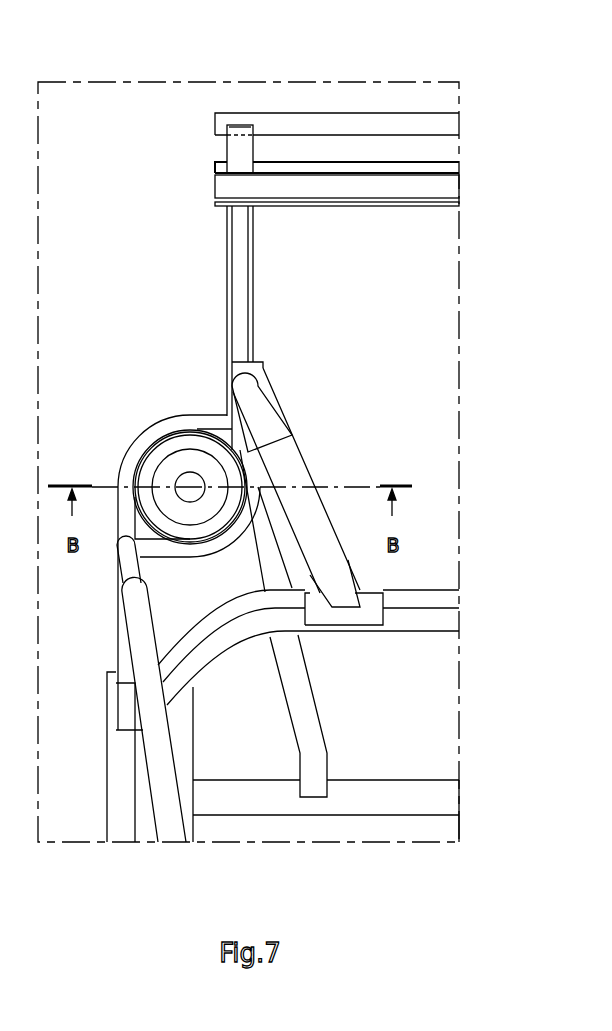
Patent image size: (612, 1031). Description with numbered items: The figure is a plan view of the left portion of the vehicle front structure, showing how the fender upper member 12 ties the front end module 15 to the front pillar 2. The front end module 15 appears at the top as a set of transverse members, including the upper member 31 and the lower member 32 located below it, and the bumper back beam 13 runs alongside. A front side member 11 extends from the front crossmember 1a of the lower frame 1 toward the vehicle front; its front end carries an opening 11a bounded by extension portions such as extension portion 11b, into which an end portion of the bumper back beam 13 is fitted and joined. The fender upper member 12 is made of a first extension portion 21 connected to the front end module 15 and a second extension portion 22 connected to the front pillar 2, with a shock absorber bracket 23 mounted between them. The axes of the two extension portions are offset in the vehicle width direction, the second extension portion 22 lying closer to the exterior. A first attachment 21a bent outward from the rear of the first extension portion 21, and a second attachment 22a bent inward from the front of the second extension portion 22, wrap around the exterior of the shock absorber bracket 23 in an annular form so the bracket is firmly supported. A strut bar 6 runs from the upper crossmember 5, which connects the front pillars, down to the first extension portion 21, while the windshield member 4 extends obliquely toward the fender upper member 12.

The lower frame 1 is at (355, 818).
The front crossmember 1a is at (460, 592).
The front pillar 2 is at (124, 706).
The windshield member 4 is at (165, 784).
The upper crossmember 5 is at (460, 621).
The strut bar 6 is at (290, 472).
The front side member 11 is at (227, 254).
The opening 11a is at (241, 132).
The extension portion 11b is at (240, 128).
The fender upper member 12 is at (143, 408).
The bumper back beam 13 is at (372, 128).
The front end module 15 is at (337, 210).
The first extension portion 21 is at (236, 290).
The first attachment 21a is at (200, 548).
The second extension portion 22 is at (124, 638).
The second attachment 22a is at (141, 441).
The shock absorber bracket 23 is at (190, 462).
The upper member 31 is at (455, 187).
The lower member 32 is at (424, 206).